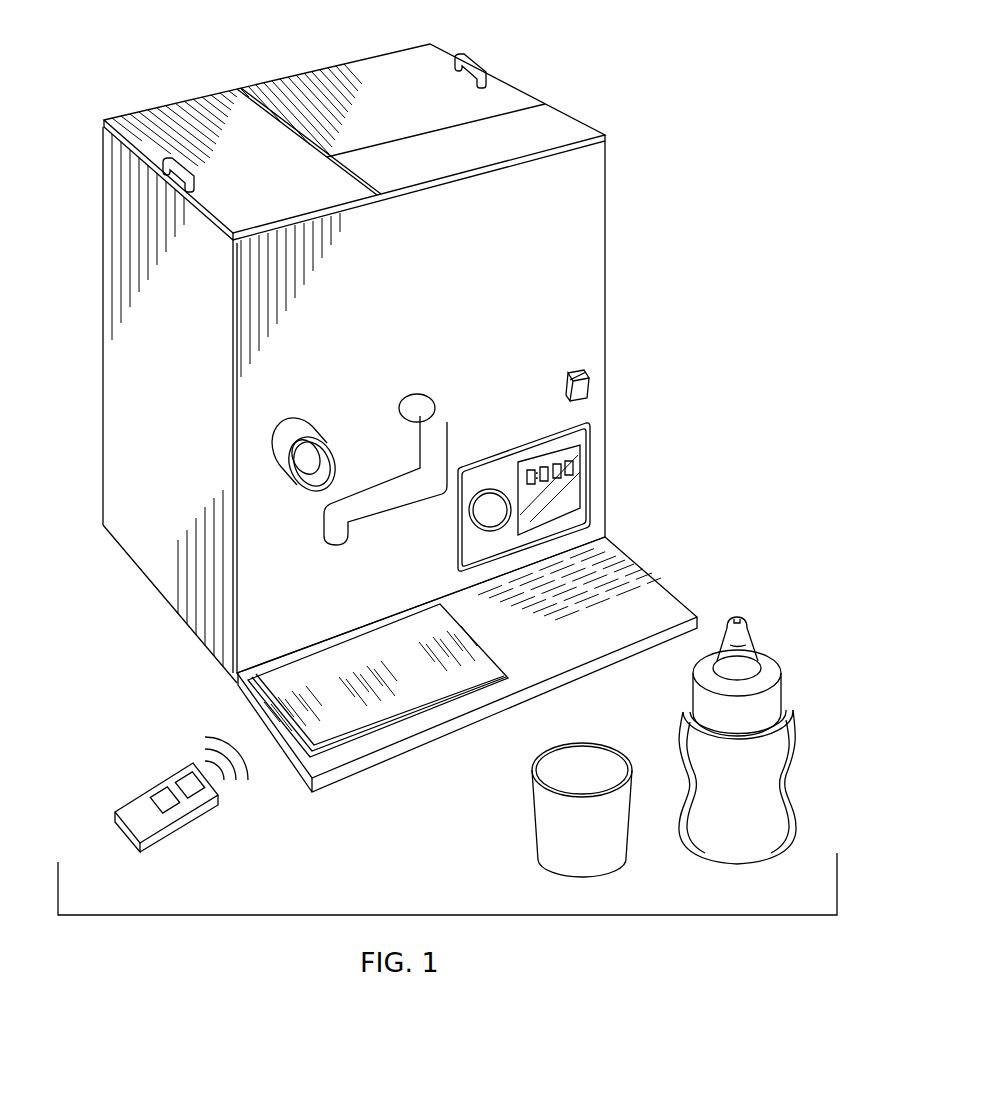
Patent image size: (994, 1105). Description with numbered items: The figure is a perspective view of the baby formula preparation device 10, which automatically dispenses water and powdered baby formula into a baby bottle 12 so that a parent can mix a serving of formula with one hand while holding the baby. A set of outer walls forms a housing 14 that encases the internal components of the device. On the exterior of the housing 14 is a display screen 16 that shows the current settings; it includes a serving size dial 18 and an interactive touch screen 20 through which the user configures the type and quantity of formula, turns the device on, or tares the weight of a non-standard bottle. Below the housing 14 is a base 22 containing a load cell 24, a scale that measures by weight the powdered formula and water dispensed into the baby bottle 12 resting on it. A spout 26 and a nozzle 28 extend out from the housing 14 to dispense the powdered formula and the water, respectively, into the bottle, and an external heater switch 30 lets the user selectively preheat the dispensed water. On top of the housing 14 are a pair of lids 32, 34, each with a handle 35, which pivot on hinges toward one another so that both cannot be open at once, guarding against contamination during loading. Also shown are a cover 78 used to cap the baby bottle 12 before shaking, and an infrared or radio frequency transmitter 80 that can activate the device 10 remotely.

The baby formula preparation device 10 is at (636, 104).
The baby bottle 12 is at (786, 616).
The housing 14 is at (112, 305).
The display screen 16 is at (587, 427).
The serving size dial 18 is at (483, 495).
The touch screen 20 is at (568, 485).
The base 22 is at (647, 592).
The load cell 24 is at (292, 717).
The spout 26 is at (312, 477).
The nozzle 28 is at (390, 503).
The external heater switch 30 is at (587, 377).
The lid 32 is at (192, 110).
The lid 34 is at (340, 67).
The handle 35 is at (180, 167).
The cover 78 is at (547, 818).
The infrared or radio frequency transmitter 80 is at (158, 783).